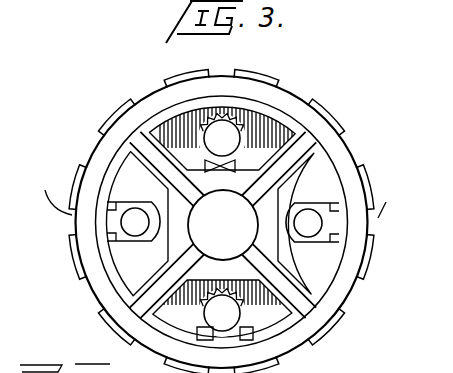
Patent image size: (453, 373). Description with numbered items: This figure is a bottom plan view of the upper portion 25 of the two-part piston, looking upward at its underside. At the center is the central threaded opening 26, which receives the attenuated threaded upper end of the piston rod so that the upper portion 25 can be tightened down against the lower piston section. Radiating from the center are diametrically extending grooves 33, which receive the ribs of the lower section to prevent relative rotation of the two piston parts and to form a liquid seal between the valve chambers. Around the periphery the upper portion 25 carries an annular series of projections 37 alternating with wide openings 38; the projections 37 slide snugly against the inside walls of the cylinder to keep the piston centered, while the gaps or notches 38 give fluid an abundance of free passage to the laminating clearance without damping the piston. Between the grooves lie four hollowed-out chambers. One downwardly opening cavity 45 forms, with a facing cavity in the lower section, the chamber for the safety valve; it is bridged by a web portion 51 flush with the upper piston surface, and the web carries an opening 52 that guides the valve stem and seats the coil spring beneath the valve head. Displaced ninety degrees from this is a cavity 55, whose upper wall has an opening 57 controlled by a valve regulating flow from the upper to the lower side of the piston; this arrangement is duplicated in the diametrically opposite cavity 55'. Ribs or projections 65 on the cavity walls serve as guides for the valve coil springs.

The upper portion 25 is at (340, 153).
The central threaded opening 26 is at (219, 192).
The grooves 33 is at (296, 140).
The projections 37 is at (338, 322).
The openings 38 is at (90, 150).
The cavity 45 is at (130, 280).
The web portion 51 is at (135, 240).
The opening 52 is at (128, 221).
The cavity 55 is at (203, 99).
The cavity 55' is at (255, 326).
The opening 57 is at (235, 142).
The ribs or projections 65 is at (110, 242).